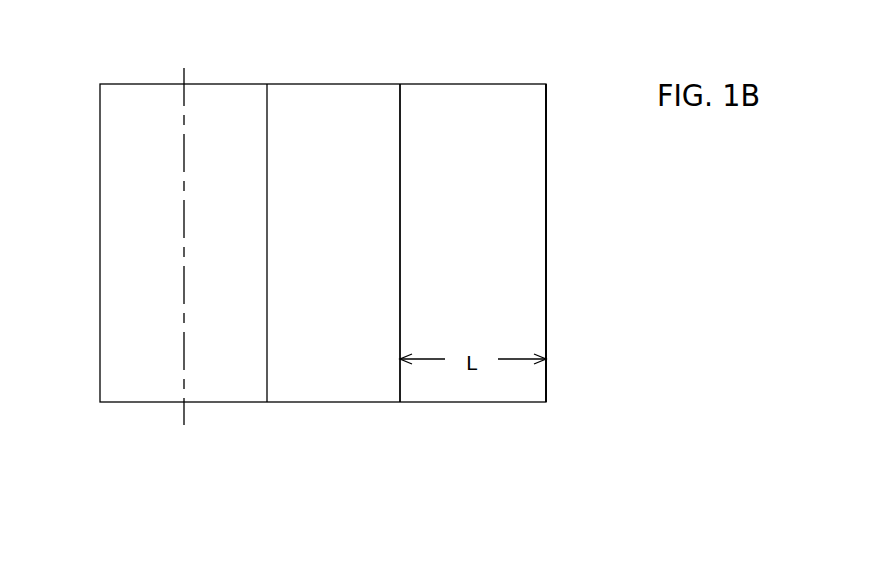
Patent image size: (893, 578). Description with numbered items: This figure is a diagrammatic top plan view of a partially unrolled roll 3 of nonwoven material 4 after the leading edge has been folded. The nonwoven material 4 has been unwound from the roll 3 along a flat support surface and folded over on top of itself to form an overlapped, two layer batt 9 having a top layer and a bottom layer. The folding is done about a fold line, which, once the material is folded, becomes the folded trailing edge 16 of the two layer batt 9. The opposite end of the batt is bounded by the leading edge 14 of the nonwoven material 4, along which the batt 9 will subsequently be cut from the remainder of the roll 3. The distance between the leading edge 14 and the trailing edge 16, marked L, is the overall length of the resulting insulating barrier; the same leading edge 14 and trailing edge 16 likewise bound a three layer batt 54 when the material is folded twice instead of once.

The roll 3 is at (132, 280).
The nonwoven material 4 is at (328, 247).
The leading edge 14 is at (398, 128).
The folded trailing edge 16 is at (548, 128).
The two layer batt 9 is at (513, 258).
The three layer batt 54 is at (588, 253).